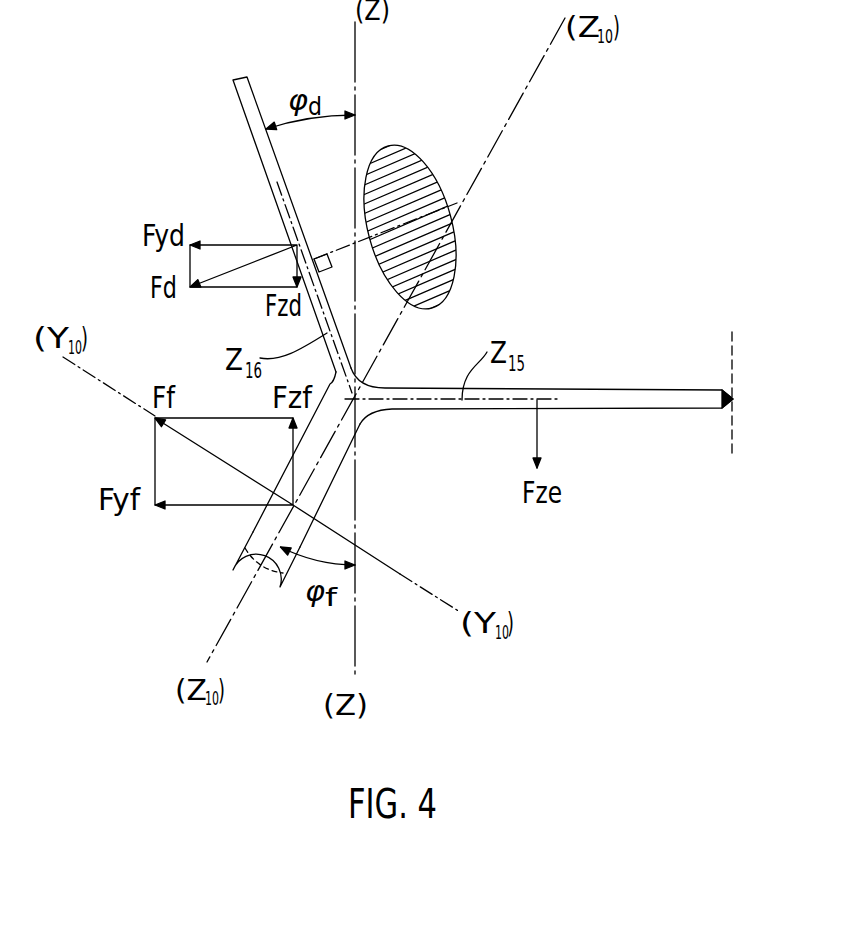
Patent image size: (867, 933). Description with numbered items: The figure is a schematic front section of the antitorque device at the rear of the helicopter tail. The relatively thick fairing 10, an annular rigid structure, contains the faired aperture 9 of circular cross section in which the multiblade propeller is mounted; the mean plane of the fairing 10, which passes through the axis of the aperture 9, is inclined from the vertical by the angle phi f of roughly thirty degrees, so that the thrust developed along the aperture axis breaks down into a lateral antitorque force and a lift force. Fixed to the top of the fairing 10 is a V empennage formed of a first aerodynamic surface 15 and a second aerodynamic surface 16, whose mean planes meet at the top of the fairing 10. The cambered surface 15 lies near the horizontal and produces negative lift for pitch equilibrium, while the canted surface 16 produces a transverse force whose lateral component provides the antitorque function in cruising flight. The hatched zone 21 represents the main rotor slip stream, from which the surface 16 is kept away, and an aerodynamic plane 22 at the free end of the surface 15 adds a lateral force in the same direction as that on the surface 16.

The faired aperture 9 is at (315, 495).
The fairing 10 is at (245, 580).
The first aerodynamic surface 15 is at (642, 402).
The second aerodynamic surface 16 is at (258, 145).
The hatched zone 21 is at (413, 172).
The aerodynamic plane 22 is at (737, 357).